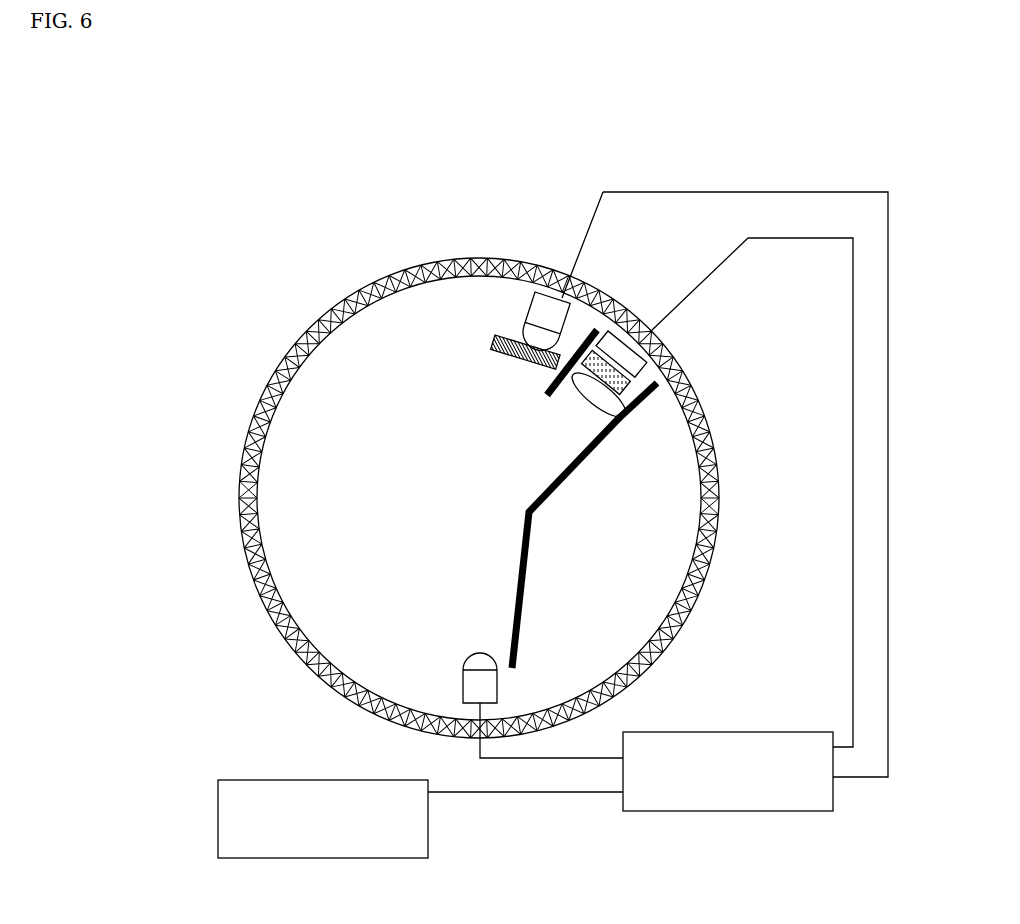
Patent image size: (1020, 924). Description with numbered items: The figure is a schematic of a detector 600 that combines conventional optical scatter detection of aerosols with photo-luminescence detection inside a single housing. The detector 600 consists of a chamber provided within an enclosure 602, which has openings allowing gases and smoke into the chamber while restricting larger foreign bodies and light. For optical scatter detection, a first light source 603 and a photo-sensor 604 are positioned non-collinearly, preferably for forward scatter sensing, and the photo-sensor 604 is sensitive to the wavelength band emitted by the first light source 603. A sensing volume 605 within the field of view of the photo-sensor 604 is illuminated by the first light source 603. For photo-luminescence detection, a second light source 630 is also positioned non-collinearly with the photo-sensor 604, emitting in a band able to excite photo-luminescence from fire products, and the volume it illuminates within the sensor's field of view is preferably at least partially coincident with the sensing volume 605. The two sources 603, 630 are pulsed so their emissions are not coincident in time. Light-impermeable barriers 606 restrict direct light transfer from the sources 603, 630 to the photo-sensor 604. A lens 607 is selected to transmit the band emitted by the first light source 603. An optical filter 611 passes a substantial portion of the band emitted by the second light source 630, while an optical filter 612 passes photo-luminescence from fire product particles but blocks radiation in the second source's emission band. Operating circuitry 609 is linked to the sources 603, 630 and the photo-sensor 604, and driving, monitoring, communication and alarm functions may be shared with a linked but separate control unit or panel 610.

The detector 600 is at (400, 243).
The enclosure 602 is at (318, 320).
The first light source 603 is at (463, 672).
The photo-sensor 604 is at (645, 373).
The sensing volume 605 is at (481, 495).
The light-impermeable barriers 606 is at (578, 340).
The lens 607 is at (622, 416).
The operating circuitry 609 is at (728, 771).
The control unit or panel 610 is at (323, 819).
The optical filter 611 is at (512, 332).
The optical filter 612 is at (658, 395).
The second light source 630 is at (535, 292).